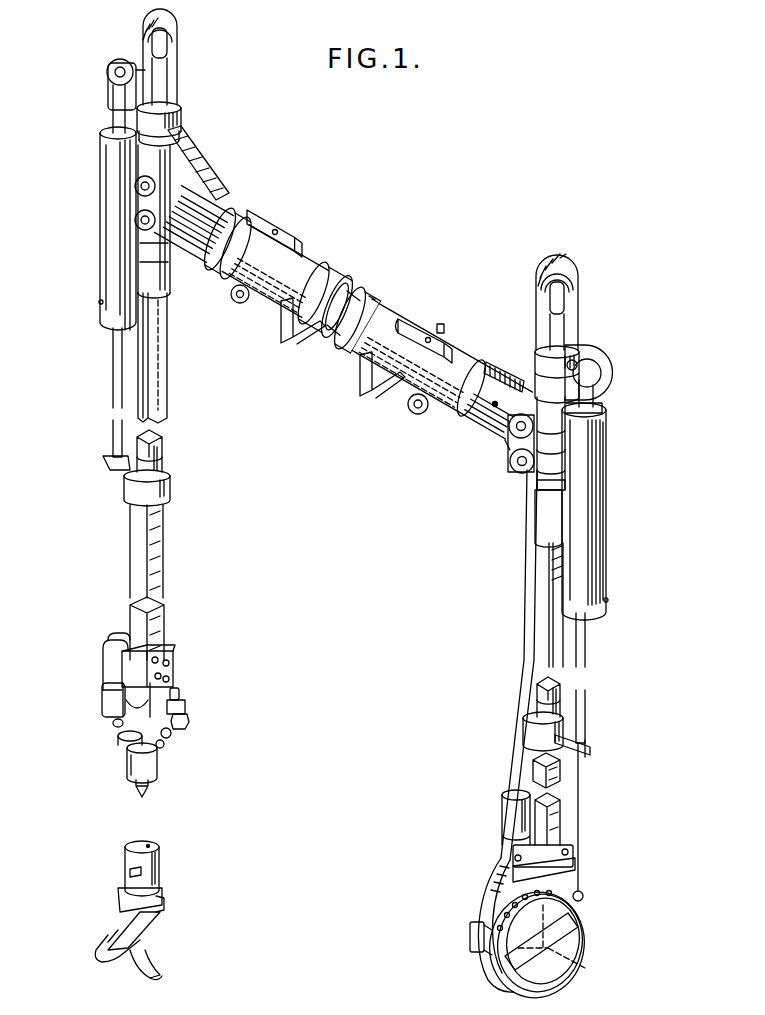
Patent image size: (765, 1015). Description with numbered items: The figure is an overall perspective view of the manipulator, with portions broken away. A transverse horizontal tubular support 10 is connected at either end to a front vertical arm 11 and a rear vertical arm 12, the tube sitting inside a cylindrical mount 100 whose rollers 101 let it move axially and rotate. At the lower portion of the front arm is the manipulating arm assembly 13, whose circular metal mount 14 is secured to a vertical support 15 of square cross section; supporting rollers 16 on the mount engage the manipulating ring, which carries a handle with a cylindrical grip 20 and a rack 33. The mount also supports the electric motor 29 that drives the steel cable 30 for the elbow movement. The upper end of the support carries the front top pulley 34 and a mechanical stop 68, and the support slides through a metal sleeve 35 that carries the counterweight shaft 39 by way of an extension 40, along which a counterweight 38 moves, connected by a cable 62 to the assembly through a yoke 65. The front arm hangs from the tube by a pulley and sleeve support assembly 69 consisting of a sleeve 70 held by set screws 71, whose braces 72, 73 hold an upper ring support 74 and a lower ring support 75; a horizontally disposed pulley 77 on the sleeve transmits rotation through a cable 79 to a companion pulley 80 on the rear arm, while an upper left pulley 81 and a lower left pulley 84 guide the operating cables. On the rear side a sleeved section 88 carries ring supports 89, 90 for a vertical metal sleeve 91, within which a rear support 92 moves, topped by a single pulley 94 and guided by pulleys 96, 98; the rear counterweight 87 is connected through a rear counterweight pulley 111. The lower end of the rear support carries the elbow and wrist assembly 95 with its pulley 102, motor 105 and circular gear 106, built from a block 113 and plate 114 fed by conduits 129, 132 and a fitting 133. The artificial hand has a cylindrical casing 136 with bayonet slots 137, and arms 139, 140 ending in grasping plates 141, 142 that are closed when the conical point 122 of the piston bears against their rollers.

The transverse horizontal tubular support 10 is at (235, 228).
The front vertical arm 11 is at (525, 577).
The rear vertical arm 12 is at (167, 527).
The manipulating arm assembly 13 is at (587, 938).
The circular metal mount 14 is at (497, 883).
The vertical support 15 is at (560, 340).
The supporting rollers 16 is at (580, 893).
The cylindrical grip 20 is at (572, 927).
The electric motor 29 is at (502, 803).
The steel cable 30 is at (520, 755).
The rack 33 is at (518, 900).
The front top pulley 34 is at (578, 263).
The metal sleeve 35 is at (537, 702).
The counterweight 38 is at (600, 513).
The counterweight shaft 39 is at (587, 650).
The extension 40 is at (582, 742).
The cable 62 is at (563, 808).
The yoke 65 is at (573, 855).
The mechanical stop 68 is at (570, 325).
The pulley and sleeve support assembly 69 is at (503, 456).
The sleeve 70 is at (473, 402).
The set screws 71 is at (497, 417).
The brace 72 is at (497, 370).
The brace 73 is at (517, 480).
The upper ring support 74 is at (573, 413).
The lower ring support 75 is at (556, 498).
The horizontally disposed pulley 77 is at (562, 455).
The cable 79 is at (496, 445).
The companion pulley 80 is at (135, 191).
The upper left pulley 81 is at (495, 404).
The lower left pulley 84 is at (527, 484).
The rear counterweight 87 is at (110, 241).
The sleeved section 88 is at (192, 210).
The upper ring support 89 is at (155, 157).
The lower ring support 90 is at (152, 255).
The vertical metal sleeve 91 is at (168, 457).
The rear support 92 is at (158, 618).
The single pulley 94 is at (173, 12).
The elbow and wrist assembly 95 is at (103, 657).
The upper left pulley 96 is at (137, 178).
The lower left pulley 98 is at (135, 215).
The cylindrical member or mount 100 is at (390, 313).
The rollers 101 is at (440, 328).
The pulley 102 is at (113, 718).
The reversible direct current electric motor 105 is at (118, 638).
The circular gear 106 is at (127, 750).
The rear counterweight pulley 111 is at (118, 63).
The block 113 is at (103, 698).
The plate 114 is at (171, 734).
The conical point 122 is at (136, 790).
The flexible conduit or tube 129 is at (186, 698).
The flexible conduit 132 is at (163, 747).
The fitting 133 is at (120, 738).
The cylindrical casing 136 is at (158, 860).
The bayonet slots 137 is at (127, 858).
The arm 139 is at (117, 927).
The arm 140 is at (147, 935).
The grasping plate 141 is at (143, 977).
The grasping plate 142 is at (150, 970).